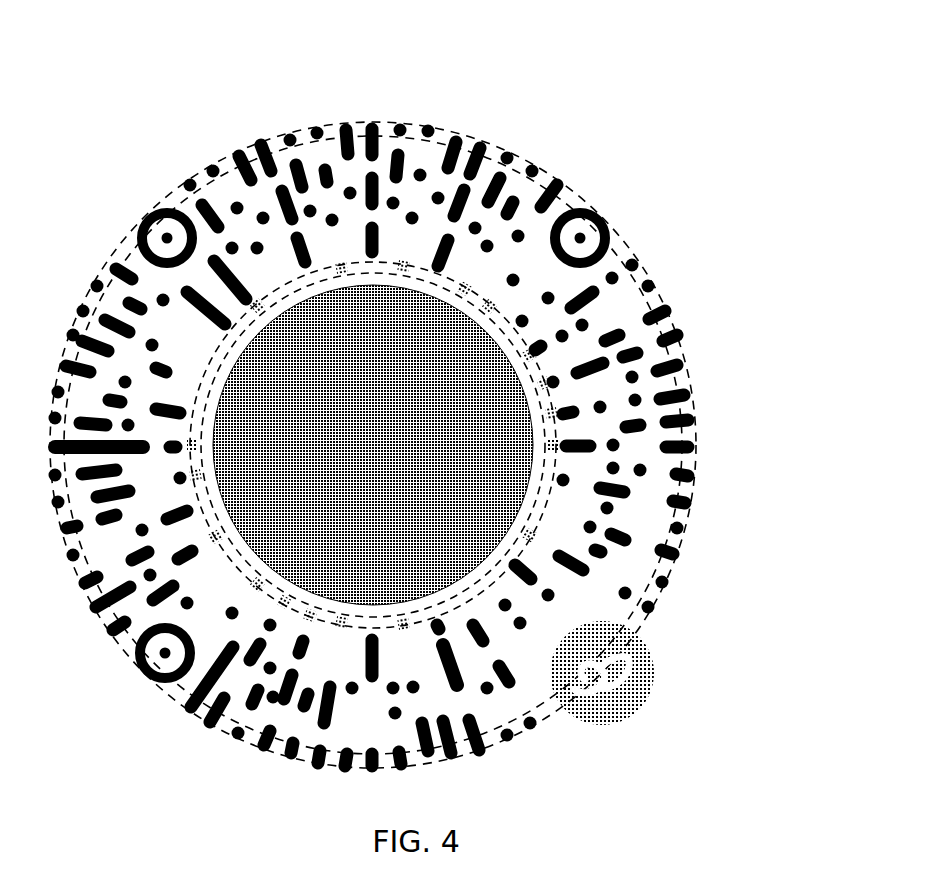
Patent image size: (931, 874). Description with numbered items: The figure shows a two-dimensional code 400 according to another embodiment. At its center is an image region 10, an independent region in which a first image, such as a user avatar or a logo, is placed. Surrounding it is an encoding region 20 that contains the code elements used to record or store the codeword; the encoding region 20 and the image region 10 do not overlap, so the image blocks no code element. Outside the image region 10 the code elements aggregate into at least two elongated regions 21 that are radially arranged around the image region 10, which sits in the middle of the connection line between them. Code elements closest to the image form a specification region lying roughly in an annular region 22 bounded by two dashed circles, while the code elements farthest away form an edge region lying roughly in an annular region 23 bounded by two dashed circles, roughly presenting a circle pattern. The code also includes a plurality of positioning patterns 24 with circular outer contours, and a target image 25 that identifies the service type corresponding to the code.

The two-dimensional code 400 is at (178, 50).
The image region 10 is at (505, 339).
The encoding region 20 is at (408, 152).
The elongated regions 21 is at (140, 455).
The annular region 22 is at (446, 275).
The annular region 23 is at (571, 202).
The positioning pattern 24 is at (140, 235).
The target image 25 is at (610, 712).